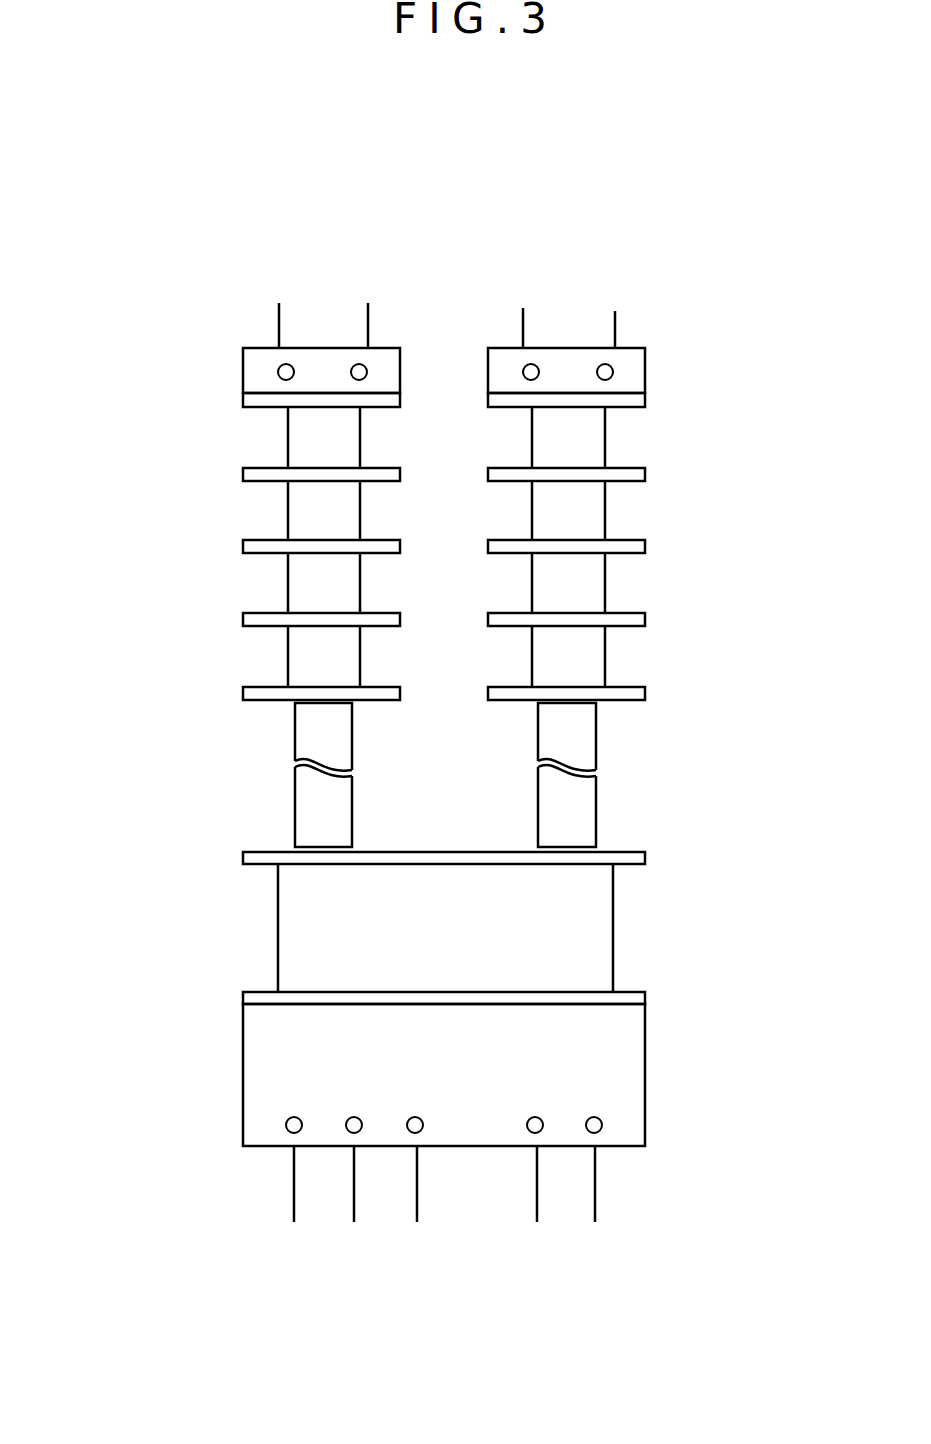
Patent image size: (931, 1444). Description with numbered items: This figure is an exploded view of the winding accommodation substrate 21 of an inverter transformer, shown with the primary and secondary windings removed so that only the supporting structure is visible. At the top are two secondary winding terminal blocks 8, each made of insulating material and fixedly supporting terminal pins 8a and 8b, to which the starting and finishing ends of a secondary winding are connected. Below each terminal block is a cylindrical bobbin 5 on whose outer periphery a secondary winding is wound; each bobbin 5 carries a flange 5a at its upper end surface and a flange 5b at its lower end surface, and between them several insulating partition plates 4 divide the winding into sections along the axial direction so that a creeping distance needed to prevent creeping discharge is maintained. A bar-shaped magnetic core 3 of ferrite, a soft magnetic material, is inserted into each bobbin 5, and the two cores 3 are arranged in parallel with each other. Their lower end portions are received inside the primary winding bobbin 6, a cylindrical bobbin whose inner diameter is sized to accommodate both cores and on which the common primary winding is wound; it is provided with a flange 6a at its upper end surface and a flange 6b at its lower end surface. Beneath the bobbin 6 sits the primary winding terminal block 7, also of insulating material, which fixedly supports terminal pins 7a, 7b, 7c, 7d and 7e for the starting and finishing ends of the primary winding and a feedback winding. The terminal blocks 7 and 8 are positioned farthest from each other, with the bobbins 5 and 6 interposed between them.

The winding accommodation substrate 21 is at (703, 228).
The secondary winding terminal block 8 is at (243, 373).
The terminal pin 8a is at (279, 326).
The terminal pin 8b is at (367, 333).
The flange 5a is at (243, 399).
The cylindrical bobbin 5 is at (288, 443).
The insulating partition plate 4 is at (243, 620).
The flange 5b is at (243, 693).
The bar-shaped magnetic core 3 is at (295, 748).
The flange 6a is at (243, 856).
The primary winding bobbin 6 is at (278, 917).
The flange 6b is at (243, 991).
The primary winding terminal block 7 is at (243, 1083).
The terminal pin 7a is at (293, 1185).
The terminal pin 7b is at (354, 1180).
The terminal pin 7c is at (417, 1184).
The terminal pin 7d is at (537, 1188).
The terminal pin 7e is at (595, 1188).